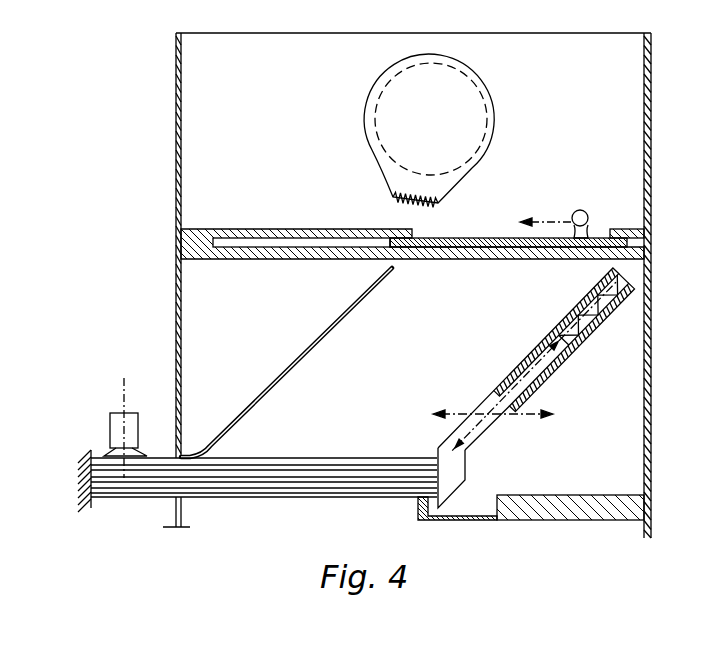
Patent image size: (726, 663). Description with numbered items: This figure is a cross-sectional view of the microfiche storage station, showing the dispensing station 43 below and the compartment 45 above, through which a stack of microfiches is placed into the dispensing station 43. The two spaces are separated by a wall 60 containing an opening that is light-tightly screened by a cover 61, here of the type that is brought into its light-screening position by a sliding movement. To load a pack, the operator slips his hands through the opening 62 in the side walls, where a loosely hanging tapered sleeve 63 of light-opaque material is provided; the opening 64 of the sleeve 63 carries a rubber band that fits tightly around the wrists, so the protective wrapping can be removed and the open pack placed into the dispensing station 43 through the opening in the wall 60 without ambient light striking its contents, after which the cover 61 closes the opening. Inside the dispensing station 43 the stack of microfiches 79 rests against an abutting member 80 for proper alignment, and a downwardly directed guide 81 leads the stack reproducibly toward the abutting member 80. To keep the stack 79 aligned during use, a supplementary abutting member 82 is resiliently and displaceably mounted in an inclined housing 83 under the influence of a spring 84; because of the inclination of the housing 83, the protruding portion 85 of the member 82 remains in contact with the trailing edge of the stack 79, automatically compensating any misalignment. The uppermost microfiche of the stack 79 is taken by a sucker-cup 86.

The dispensing station 43 is at (632, 426).
The compartment 45 is at (633, 150).
The wall 60 is at (203, 229).
The cover 61 is at (490, 238).
The opening 62 is at (473, 102).
The tapered sleeve 63 is at (470, 170).
The opening of the tube 64 is at (438, 203).
The stack of microfiches 79 is at (358, 460).
The abutting member 80 is at (80, 450).
The downwardly directed guide 81 is at (328, 335).
The supplementary abutting member 82 is at (480, 427).
The housing 83 is at (557, 322).
The spring 84 is at (600, 323).
The protruding portion 85 is at (455, 470).
The sucker-cup 86 is at (138, 422).